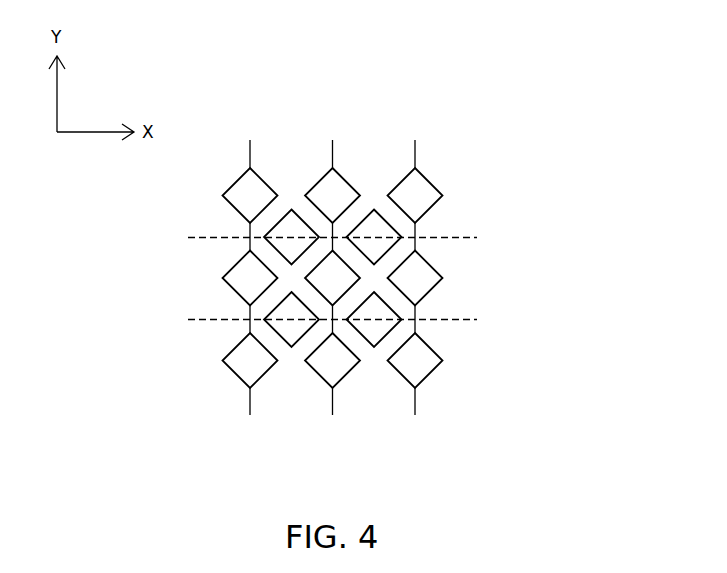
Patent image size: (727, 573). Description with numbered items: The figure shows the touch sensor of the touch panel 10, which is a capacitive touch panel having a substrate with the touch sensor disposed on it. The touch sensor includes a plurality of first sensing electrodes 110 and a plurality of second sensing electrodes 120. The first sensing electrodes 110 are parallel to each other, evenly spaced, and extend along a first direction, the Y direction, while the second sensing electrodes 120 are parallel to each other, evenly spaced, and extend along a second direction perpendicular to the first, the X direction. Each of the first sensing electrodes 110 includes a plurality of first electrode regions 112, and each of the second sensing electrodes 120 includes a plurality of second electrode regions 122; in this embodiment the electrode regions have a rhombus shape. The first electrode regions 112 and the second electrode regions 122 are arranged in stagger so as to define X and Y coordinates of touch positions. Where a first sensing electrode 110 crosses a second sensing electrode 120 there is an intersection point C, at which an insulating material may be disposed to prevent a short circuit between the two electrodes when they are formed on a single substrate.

The touch panel 10 is at (567, 58).
The first sensing electrodes 110 is at (251, 434).
The first electrode regions 112 is at (438, 193).
The second sensing electrodes 120 is at (174, 234).
The second electrode regions 122 is at (285, 218).
The intersection point C is at (435, 312).